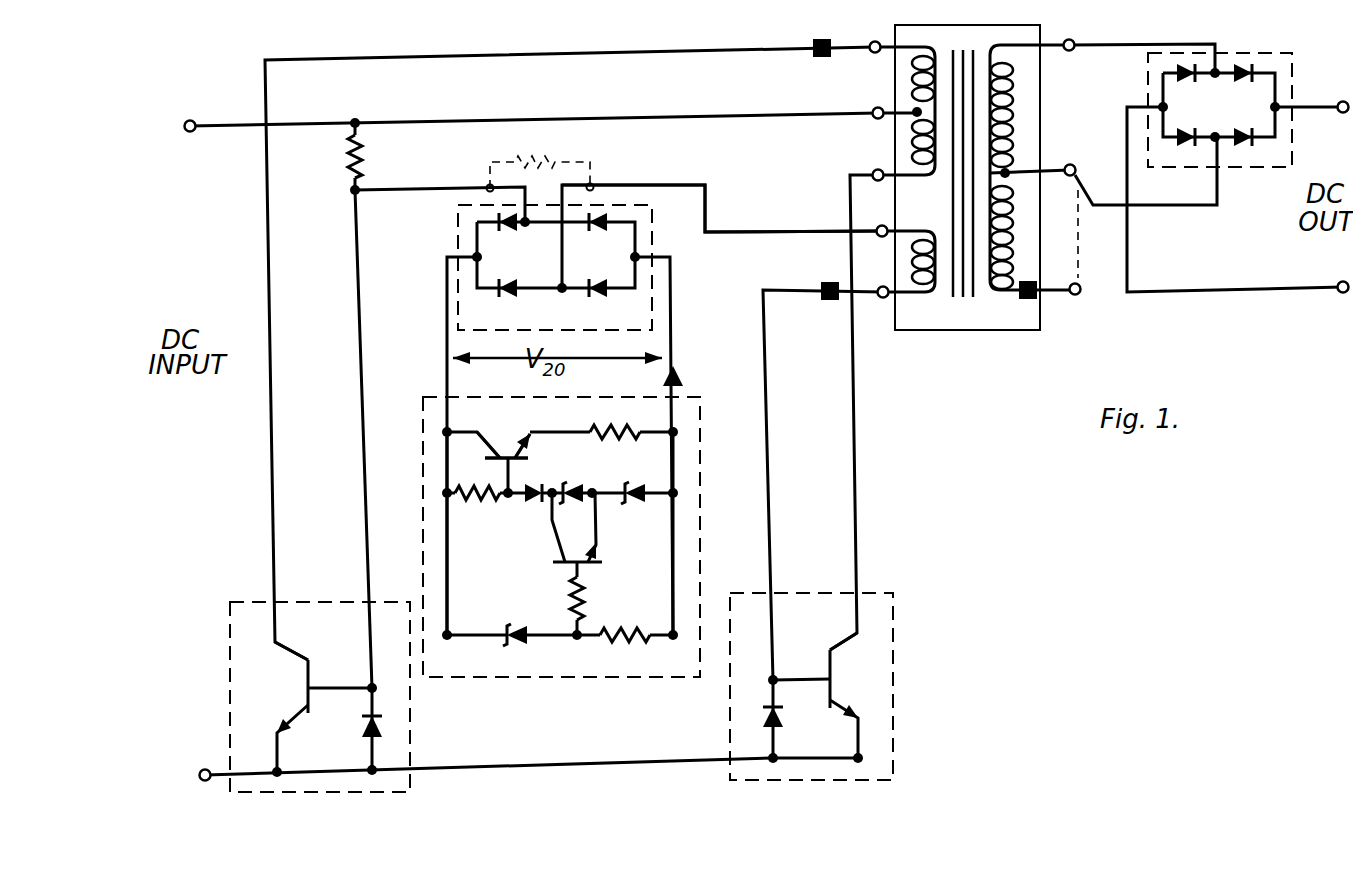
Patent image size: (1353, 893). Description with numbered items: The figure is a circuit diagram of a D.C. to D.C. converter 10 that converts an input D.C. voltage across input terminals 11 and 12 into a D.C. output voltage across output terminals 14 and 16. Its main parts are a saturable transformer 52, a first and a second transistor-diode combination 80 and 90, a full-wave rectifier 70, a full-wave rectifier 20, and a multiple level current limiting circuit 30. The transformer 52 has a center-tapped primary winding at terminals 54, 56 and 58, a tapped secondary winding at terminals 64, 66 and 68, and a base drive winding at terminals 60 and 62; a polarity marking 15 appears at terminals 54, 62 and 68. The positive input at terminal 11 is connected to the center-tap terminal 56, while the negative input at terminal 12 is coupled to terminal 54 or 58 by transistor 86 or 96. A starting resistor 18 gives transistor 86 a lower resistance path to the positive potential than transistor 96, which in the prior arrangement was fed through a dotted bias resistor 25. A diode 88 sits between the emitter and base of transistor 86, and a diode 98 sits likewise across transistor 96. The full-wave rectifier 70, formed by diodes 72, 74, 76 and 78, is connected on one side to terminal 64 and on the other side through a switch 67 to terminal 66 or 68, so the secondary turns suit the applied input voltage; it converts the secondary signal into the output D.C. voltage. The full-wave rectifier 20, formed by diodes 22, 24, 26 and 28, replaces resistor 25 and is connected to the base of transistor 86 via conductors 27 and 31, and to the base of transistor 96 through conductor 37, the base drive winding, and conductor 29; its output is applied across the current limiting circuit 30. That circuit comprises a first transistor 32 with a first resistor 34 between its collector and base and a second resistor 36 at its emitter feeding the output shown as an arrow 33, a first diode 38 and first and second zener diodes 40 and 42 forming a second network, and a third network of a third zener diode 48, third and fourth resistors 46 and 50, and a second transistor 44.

The D.C. to D.C. converter 10 is at (1194, 30).
The input terminal 11 is at (185, 149).
The input terminal 12 is at (187, 760).
The output terminal 14 is at (1320, 89).
The polarity marking 15 is at (822, 57).
The output terminal 16 is at (1320, 303).
The starting resistor 18 is at (363, 157).
The full-wave rectifier 20 is at (522, 265).
The diode 22 is at (508, 228).
The diode 24 is at (598, 228).
The bias resistor 25 is at (523, 160).
The diode 26 is at (512, 292).
The conductor 27 is at (428, 186).
The diode 28 is at (600, 292).
The conductor 29 is at (769, 395).
The multiple level current limiting circuit 30 is at (587, 519).
The conductor 31 is at (362, 262).
The first transistor 32 is at (524, 463).
The arrow 33 is at (680, 372).
The first resistor 34 is at (476, 505).
The second resistor 36 is at (584, 410).
The conductor 37 is at (780, 231).
The first diode 38 is at (533, 505).
The first zener diode 40 is at (575, 490).
The second zener diode 42 is at (628, 490).
The second transistor 44 is at (606, 566).
The third resistor 46 is at (585, 596).
The third zener diode 48 is at (522, 640).
The fourth resistor 50 is at (630, 643).
The saturable transformer 52 is at (975, 330).
The terminal 54 is at (875, 53).
The terminal 56 is at (878, 119).
The terminal 58 is at (878, 181).
The terminal 60 is at (882, 237).
The terminal 62 is at (883, 298).
The terminal 64 is at (1075, 43).
The terminal 66 is at (1075, 166).
The switch 67 is at (1082, 195).
The terminal 68 is at (1080, 292).
The full-wave rectifier 70 is at (1236, 113).
The diode 72 is at (1186, 82).
The diode 74 is at (1240, 82).
The diode 76 is at (1180, 147).
The diode 78 is at (1245, 147).
The first transistor-diode combination 80 is at (287, 684).
The transistor 86 is at (298, 697).
The diode 88 is at (364, 732).
The second transistor-diode combination 90 is at (846, 686).
The transistor 96 is at (838, 687).
The diode 98 is at (785, 722).